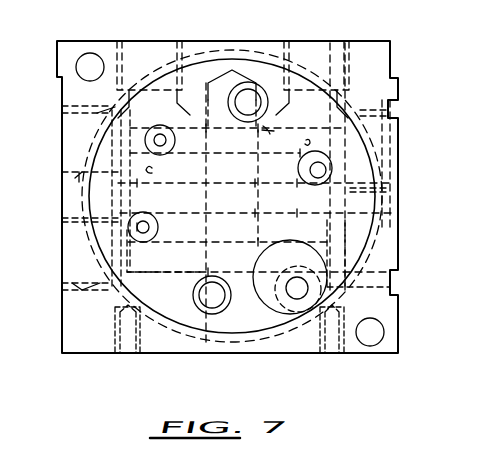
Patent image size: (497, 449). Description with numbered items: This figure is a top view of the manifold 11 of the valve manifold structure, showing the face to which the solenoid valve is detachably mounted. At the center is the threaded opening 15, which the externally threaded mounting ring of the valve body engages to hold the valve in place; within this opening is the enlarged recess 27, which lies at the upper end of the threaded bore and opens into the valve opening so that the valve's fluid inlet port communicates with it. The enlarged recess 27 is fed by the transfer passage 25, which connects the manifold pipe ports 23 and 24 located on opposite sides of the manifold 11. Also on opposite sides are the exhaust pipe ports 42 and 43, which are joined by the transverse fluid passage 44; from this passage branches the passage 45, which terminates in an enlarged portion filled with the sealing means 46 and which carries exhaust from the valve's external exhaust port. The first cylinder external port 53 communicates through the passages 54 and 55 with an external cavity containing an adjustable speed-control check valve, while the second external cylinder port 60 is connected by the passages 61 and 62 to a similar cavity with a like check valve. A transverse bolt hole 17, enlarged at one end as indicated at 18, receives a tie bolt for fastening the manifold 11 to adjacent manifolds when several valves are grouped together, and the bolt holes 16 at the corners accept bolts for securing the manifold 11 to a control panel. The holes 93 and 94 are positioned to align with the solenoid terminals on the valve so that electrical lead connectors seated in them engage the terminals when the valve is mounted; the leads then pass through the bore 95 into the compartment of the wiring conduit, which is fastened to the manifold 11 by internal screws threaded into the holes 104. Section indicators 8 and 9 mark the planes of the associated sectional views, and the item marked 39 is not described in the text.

The manifold 11 is at (366, 41).
The threaded opening 15 is at (357, 154).
The bore 95 is at (209, 352).
The section line 8- 8 is at (232, 5).
The section line 9- 9 is at (295, 343).
The second external cylinder port 60 is at (131, 46).
The first cylinder external port 53 is at (337, 50).
The bolt holes 16 is at (78, 74).
The hole 94 is at (255, 85).
The pipe port 42 is at (62, 122).
The enlarged end of bolt hole 18 is at (74, 178).
The manifold pipe port 23 is at (68, 283).
The passage 61 is at (156, 171).
The sealing means 46 is at (170, 132).
The passage 45 is at (165, 141).
The transverse fluid passage 44 is at (270, 132).
The passage 54 is at (302, 145).
The passage 55 is at (311, 185).
The pipe port 43 is at (400, 112).
The transverse bolt hole 17 is at (402, 190).
The manifold pipe port 24 is at (398, 270).
The passage 62 is at (150, 227).
The transfer passage 25 is at (143, 270).
The hole 93 is at (208, 305).
The enlarged recess 27 is at (275, 310).
The inner hole 39 is at (292, 300).
The holes 104 is at (124, 355).